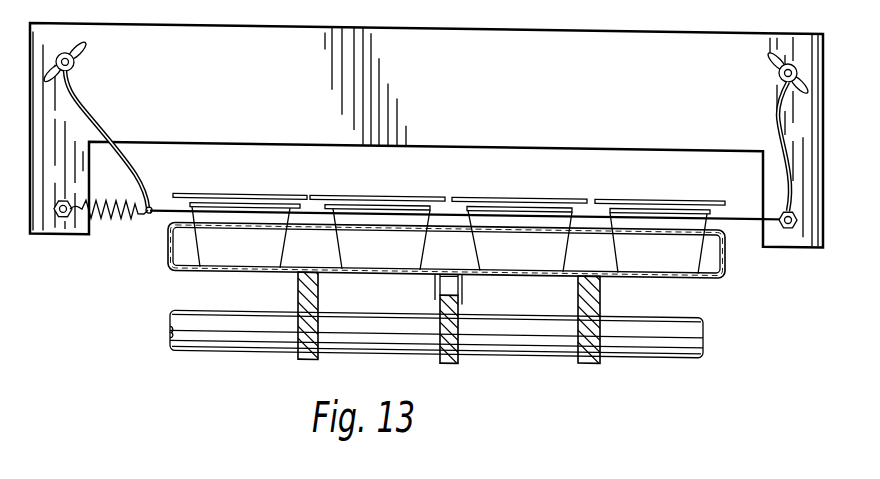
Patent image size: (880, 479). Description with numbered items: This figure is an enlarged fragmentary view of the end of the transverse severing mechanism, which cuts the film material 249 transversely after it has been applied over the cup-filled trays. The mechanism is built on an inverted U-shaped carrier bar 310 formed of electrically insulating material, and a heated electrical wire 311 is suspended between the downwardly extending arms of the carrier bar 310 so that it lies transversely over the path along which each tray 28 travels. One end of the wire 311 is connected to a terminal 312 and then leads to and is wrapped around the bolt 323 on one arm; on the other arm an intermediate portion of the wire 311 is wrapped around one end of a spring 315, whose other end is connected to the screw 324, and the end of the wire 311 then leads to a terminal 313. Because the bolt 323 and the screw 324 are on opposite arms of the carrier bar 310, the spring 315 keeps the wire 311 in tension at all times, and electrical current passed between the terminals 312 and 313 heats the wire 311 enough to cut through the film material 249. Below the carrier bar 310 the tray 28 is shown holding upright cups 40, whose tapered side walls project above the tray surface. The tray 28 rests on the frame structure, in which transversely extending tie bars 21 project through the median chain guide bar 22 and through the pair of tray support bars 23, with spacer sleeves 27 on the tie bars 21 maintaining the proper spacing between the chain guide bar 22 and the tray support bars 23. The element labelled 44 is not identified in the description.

The carrier bar 310 is at (540, 39).
The terminal 313 is at (78, 61).
The terminal 312 is at (777, 62).
The screw 324 is at (72, 192).
The spring 315 is at (126, 218).
The heated electrical wire 311 is at (739, 201).
The bolt 323 is at (788, 221).
The film material 249 is at (265, 186).
The tray 28 is at (170, 281).
The cup 40 is at (245, 275).
The tie bar 21 is at (170, 328).
The spacer sleeve 27 is at (232, 340).
The tray support bar 23 is at (298, 356).
The chain guide bar 22 is at (450, 360).
The bracket 44 is at (462, 284).